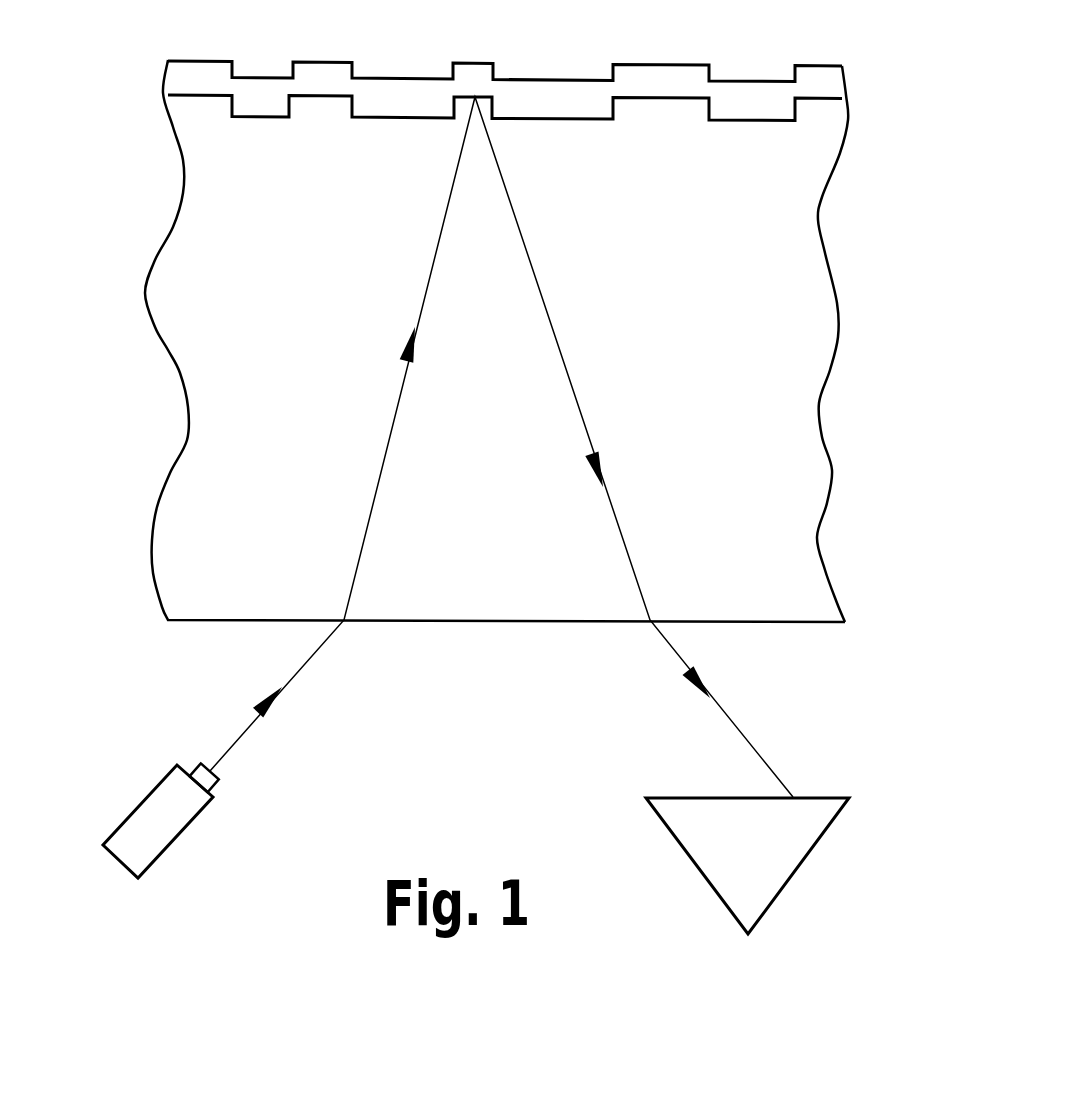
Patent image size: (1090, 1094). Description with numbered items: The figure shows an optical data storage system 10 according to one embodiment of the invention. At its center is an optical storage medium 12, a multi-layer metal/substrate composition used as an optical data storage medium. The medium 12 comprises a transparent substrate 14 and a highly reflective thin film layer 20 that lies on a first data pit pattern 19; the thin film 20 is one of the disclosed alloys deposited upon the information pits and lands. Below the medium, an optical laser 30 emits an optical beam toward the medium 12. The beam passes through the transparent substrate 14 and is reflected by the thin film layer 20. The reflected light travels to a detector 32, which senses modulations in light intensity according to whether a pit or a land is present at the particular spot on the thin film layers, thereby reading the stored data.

The optical data storage system 10 is at (498, 662).
The optical storage medium 12 is at (122, 446).
The transparent substrate 14 is at (752, 497).
The first data pit pattern 19 is at (727, 122).
The highly reflective thin film layer 20 is at (645, 77).
The optical laser 30 is at (180, 838).
The detector 32 is at (785, 880).